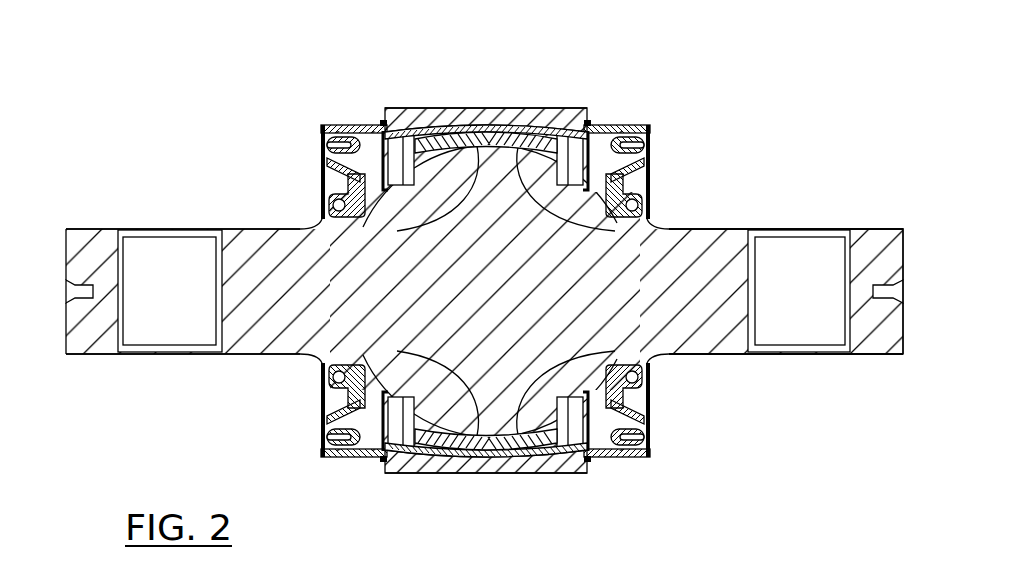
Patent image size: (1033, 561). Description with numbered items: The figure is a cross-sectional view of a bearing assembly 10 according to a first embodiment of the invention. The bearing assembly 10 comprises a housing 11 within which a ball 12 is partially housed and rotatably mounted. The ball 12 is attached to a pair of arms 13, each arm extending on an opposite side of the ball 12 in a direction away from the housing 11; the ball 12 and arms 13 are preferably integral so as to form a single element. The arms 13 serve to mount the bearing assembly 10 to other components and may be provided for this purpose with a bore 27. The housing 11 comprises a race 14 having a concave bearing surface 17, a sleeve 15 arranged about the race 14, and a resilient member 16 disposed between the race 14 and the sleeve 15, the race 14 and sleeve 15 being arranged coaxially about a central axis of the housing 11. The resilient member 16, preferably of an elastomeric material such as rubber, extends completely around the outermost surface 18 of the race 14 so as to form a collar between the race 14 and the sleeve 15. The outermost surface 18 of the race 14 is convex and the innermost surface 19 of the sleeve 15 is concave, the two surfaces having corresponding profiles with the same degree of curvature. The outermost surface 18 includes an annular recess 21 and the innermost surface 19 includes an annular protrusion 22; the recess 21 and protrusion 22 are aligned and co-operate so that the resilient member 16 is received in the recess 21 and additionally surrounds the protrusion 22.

The bearing assembly 10 is at (652, 80).
The housing 11 is at (382, 117).
The ball 12 is at (485, 280).
The arms 13 is at (710, 232).
The race 14 is at (372, 450).
The sleeve 15 is at (523, 470).
The resilient member 16 is at (433, 458).
The concave bearing surface 17 is at (653, 360).
The outermost surface 18 is at (650, 162).
The innermost surface 19 is at (525, 120).
The annular recess 21 is at (322, 215).
The annular protrusion 22 is at (483, 120).
The bore 27 is at (164, 247).